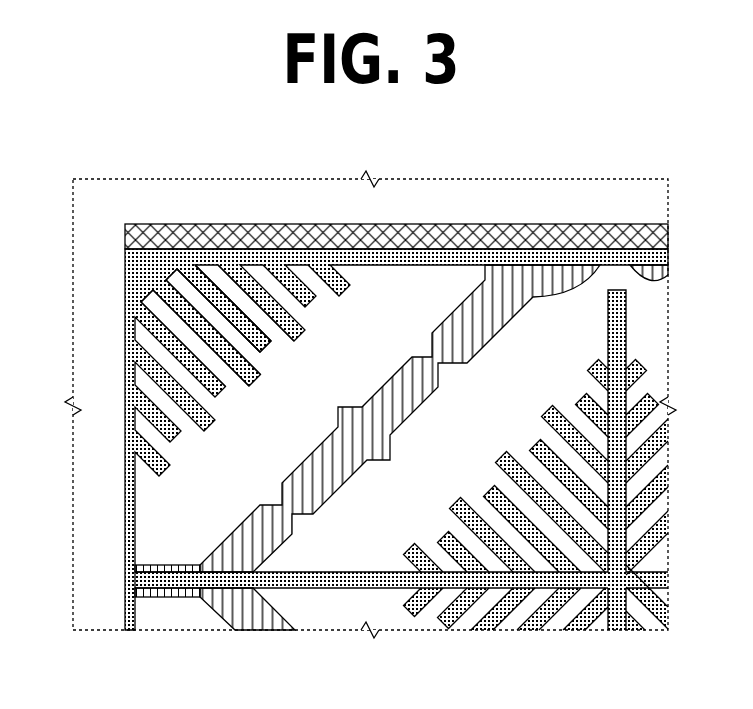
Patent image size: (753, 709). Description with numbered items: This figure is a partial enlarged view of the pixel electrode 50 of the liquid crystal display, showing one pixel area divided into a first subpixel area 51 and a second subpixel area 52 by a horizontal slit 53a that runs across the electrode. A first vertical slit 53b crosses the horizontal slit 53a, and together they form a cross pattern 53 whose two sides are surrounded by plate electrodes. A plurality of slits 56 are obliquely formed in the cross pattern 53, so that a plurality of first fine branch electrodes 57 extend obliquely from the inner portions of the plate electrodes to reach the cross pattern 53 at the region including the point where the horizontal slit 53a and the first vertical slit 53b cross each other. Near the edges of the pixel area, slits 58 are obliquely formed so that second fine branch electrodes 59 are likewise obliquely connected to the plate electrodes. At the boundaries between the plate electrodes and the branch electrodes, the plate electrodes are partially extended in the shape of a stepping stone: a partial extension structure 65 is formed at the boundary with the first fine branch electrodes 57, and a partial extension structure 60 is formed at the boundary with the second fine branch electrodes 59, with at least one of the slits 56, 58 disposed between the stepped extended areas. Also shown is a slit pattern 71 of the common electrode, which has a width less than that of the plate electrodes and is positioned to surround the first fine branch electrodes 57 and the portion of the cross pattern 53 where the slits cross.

The pixel electrode 50 is at (110, 328).
The first subpixel area 51 is at (205, 541).
The second subpixel area 52 is at (190, 610).
The cross pattern 53 is at (427, 480).
The horizontal slit 53a is at (338, 596).
The first vertical slit 53b is at (620, 444).
The slit 56 is at (458, 522).
The first fine branch electrode 57 is at (520, 498).
The slit 58 is at (241, 388).
The second fine branch electrode 59 is at (190, 290).
The partial extension structure 60 is at (268, 355).
The partial extension structure 65 is at (487, 480).
The slit pattern 71 is at (465, 297).